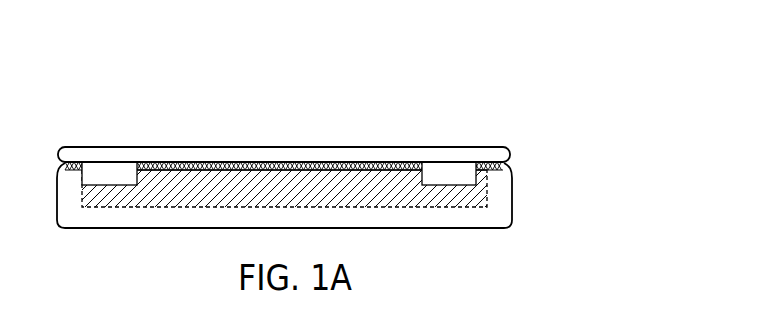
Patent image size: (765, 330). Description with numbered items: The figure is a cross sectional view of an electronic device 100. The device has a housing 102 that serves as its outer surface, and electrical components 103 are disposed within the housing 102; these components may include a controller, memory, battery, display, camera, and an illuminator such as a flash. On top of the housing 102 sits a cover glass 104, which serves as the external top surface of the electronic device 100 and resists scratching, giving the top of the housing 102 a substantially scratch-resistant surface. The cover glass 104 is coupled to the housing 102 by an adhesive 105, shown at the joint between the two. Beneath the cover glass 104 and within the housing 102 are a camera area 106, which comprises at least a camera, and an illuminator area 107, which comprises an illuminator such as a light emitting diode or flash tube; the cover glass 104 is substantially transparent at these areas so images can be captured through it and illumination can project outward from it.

The electronic device 100 is at (537, 100).
The housing 102 is at (132, 227).
The electrical components 103 is at (403, 197).
The cover glass 104 is at (158, 147).
The adhesive 105 is at (510, 165).
The camera area 106 is at (449, 173).
The illuminator area 107 is at (109, 173).